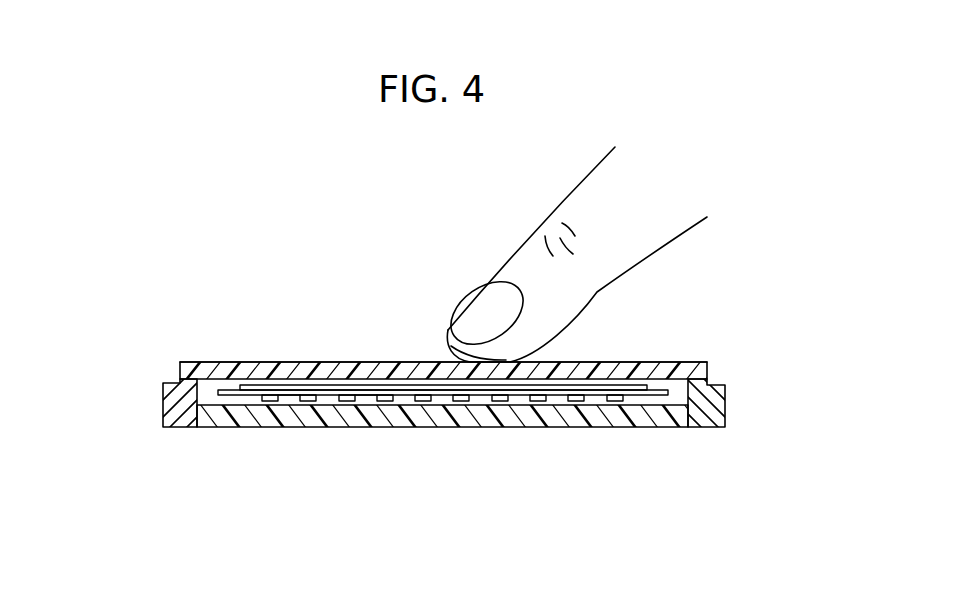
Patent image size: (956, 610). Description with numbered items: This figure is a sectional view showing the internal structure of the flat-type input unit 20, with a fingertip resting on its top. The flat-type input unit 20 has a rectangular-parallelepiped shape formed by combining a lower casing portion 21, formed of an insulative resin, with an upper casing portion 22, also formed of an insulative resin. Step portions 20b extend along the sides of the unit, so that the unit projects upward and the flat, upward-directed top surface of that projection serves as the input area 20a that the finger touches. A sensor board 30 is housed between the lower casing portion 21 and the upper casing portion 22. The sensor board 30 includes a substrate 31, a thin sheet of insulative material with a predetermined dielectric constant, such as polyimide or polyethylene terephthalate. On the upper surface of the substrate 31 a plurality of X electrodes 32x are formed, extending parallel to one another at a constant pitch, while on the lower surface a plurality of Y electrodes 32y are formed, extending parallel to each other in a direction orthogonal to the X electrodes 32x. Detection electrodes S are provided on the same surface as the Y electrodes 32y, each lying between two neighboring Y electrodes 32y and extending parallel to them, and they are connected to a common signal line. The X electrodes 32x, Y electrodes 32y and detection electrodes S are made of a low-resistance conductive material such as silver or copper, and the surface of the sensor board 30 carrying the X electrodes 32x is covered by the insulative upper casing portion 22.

The flat-type input unit 20 is at (422, 398).
The input area 20a is at (362, 362).
The step portions 20b is at (173, 384).
The lower casing portion 21 is at (247, 421).
The upper casing portion 22 is at (213, 365).
The sensor board 30 is at (459, 400).
The substrate 31 is at (216, 399).
The X electrodes 32x is at (285, 385).
The Y electrodes 32y is at (270, 403).
The detection electrodes S is at (315, 403).